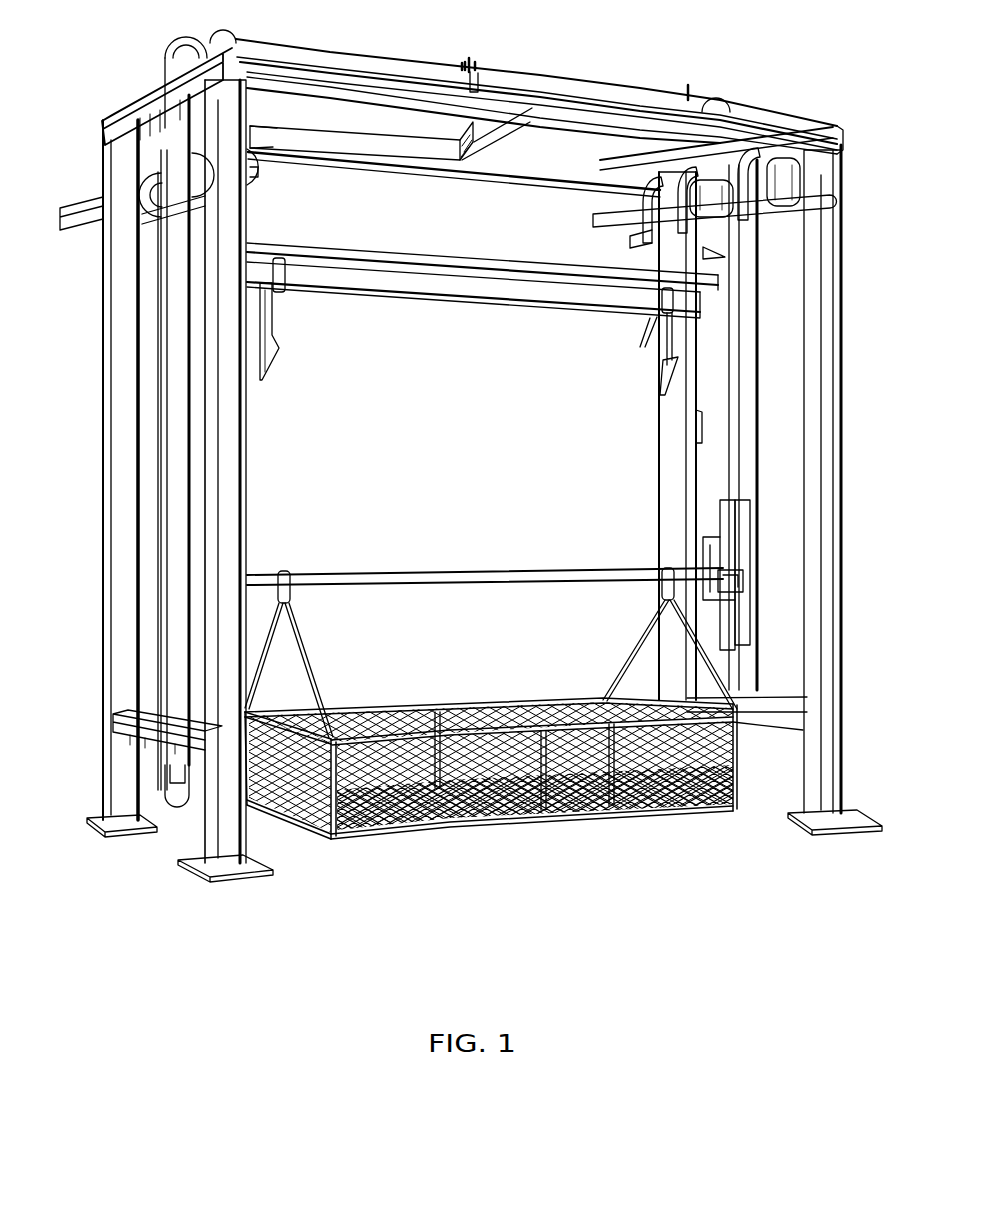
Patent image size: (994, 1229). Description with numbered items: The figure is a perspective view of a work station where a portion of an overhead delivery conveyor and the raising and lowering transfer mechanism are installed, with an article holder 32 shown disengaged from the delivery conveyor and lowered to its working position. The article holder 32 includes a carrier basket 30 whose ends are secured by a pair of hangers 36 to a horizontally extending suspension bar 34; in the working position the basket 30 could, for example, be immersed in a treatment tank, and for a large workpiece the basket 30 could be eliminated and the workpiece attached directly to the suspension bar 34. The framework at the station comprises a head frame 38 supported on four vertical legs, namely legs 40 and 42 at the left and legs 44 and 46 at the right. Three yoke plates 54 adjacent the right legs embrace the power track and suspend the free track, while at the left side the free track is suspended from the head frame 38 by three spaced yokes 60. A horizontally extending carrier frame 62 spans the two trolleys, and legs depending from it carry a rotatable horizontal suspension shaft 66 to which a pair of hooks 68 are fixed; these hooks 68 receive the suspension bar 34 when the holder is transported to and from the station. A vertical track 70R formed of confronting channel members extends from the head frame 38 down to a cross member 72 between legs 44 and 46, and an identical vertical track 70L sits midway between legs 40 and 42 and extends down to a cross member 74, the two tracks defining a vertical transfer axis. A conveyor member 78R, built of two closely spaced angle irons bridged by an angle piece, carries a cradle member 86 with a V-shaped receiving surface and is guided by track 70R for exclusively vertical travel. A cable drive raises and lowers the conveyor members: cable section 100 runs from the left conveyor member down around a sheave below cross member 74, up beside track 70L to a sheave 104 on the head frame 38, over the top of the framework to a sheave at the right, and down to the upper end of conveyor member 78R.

The carrier basket 30 is at (495, 700).
The article holder 32 is at (486, 561).
The suspension bar 34 is at (418, 570).
The hangers 36 is at (309, 667).
The head frame 38 is at (770, 122).
The left vertical leg 40 is at (237, 505).
The left vertical leg 42 is at (102, 540).
The right vertical leg 44 is at (842, 532).
The right vertical leg 46 is at (672, 489).
The yoke plates 54 is at (648, 225).
The yokes 60 is at (262, 152).
The carrier frame 62 is at (486, 279).
The suspension shaft 66 is at (456, 298).
The hooks 68 is at (278, 328).
The left vertical track 70L is at (160, 342).
The right vertical track 70R is at (757, 388).
The cross member 72 is at (792, 738).
The cross member 74 is at (138, 738).
The right conveyor member 78R is at (761, 535).
The cradle member 86 is at (745, 581).
The cable section 100 is at (593, 80).
The sheave 104 is at (180, 40).